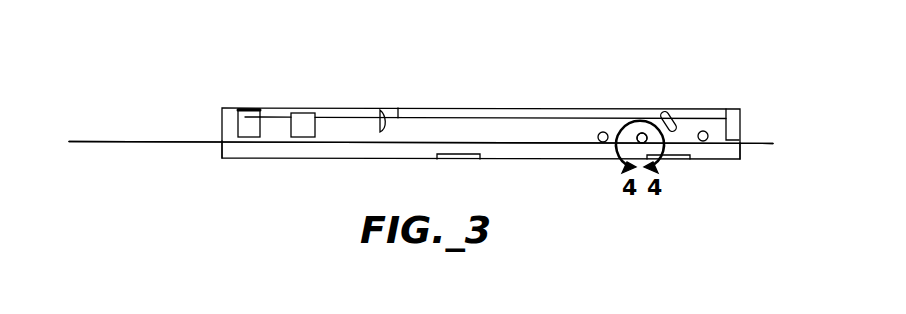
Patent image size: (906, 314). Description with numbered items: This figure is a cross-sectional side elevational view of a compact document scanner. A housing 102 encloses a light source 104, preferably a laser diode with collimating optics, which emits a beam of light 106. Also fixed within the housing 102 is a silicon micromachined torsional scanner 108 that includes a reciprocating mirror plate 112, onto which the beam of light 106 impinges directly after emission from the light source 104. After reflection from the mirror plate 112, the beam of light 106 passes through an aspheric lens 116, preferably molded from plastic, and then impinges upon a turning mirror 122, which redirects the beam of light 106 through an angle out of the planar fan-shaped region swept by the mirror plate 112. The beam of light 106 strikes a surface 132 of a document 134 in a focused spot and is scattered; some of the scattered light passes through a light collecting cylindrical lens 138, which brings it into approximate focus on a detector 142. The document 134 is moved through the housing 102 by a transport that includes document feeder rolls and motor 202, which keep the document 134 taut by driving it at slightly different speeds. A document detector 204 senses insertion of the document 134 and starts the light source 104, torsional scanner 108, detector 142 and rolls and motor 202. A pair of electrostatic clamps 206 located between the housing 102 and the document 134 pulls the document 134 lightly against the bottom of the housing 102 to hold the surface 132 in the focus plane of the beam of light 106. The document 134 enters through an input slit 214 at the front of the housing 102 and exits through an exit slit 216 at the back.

The housing 102 is at (474, 108).
The light source 104 is at (304, 113).
The beam of light 106 is at (398, 108).
The torsional scanner 108 is at (251, 109).
The mirror plate 112 is at (244, 121).
The aspheric lens 116 is at (381, 110).
The turning mirror 122 is at (661, 112).
The surface 132 is at (163, 141).
The document 134 is at (141, 142).
The cylindrical lens 138 is at (630, 132).
The detector 142 is at (632, 130).
The rolls and motor 202 is at (598, 141).
The document detector 204 is at (737, 108).
The electrostatic clamps 206 is at (460, 160).
The input slit 214 is at (758, 170).
The exit slit 216 is at (221, 152).